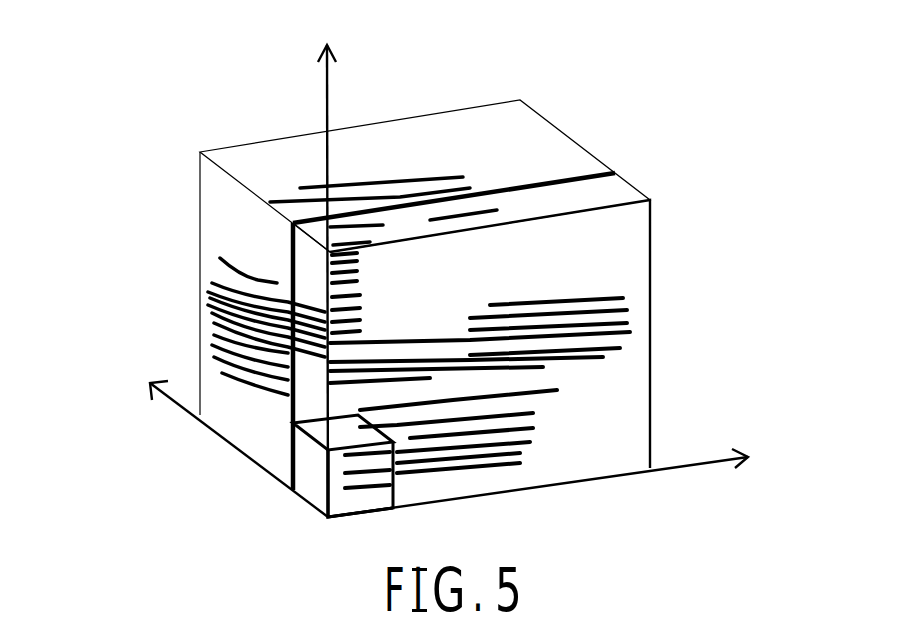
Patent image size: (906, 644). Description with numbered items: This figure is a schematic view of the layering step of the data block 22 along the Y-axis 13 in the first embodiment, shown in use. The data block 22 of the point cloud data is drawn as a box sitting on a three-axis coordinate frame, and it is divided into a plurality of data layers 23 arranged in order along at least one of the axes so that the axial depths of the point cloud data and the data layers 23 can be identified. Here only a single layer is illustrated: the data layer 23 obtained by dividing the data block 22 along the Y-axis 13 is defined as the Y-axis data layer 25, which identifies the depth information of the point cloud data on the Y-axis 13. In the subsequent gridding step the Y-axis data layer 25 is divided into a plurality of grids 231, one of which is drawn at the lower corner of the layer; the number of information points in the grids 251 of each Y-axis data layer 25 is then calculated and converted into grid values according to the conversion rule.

The Y-axis 13 is at (170, 402).
The data block 22 is at (538, 110).
The data layer 23 is at (617, 183).
The Y-axis data layer 25 is at (623, 193).
The grid 231 is at (270, 480).
The grid 251 is at (298, 500).